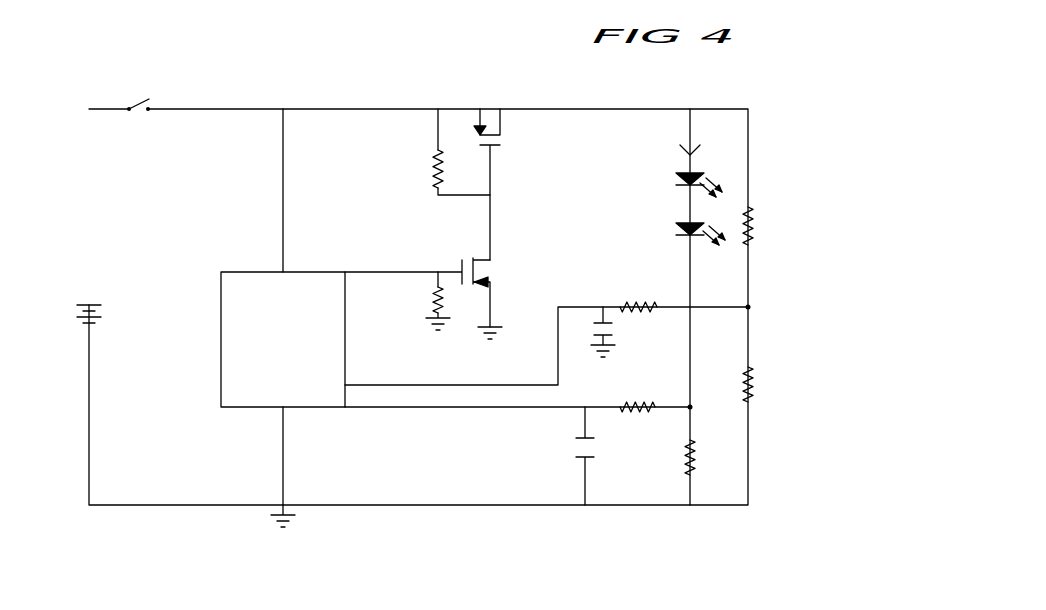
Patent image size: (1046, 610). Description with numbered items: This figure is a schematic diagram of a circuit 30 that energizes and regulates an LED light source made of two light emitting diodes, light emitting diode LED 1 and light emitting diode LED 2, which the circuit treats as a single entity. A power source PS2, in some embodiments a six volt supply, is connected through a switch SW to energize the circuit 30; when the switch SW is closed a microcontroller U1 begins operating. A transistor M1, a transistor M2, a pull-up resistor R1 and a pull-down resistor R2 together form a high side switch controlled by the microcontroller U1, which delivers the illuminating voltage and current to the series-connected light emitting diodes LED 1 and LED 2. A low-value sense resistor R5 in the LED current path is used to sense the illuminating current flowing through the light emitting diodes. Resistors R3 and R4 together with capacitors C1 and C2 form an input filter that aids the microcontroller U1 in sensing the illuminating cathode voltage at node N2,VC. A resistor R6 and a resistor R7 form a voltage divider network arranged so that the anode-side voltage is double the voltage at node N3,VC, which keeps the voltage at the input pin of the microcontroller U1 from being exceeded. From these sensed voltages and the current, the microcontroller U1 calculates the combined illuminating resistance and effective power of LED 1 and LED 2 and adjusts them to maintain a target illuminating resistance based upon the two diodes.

The circuit 30 is at (752, 89).
The switch SW is at (137, 101).
The power source PS2 is at (106, 304).
The microcontroller U1 is at (241, 288).
The transistor M1 is at (482, 117).
The transistor M2 is at (481, 276).
The resistor R1 is at (435, 174).
The resistor R2 is at (436, 290).
The resistor R3 is at (630, 304).
The resistor R4 is at (643, 409).
The resistor R5 is at (694, 463).
The resistor R6 is at (751, 224).
The resistor R7 is at (751, 389).
The capacitor C1 is at (594, 336).
The capacitor C2 is at (576, 456).
The light emitting diode LED 1 is at (713, 183).
The light emitting diode LED 2 is at (705, 241).
The node N3,VC is at (749, 308).
The node N2,VC is at (690, 408).